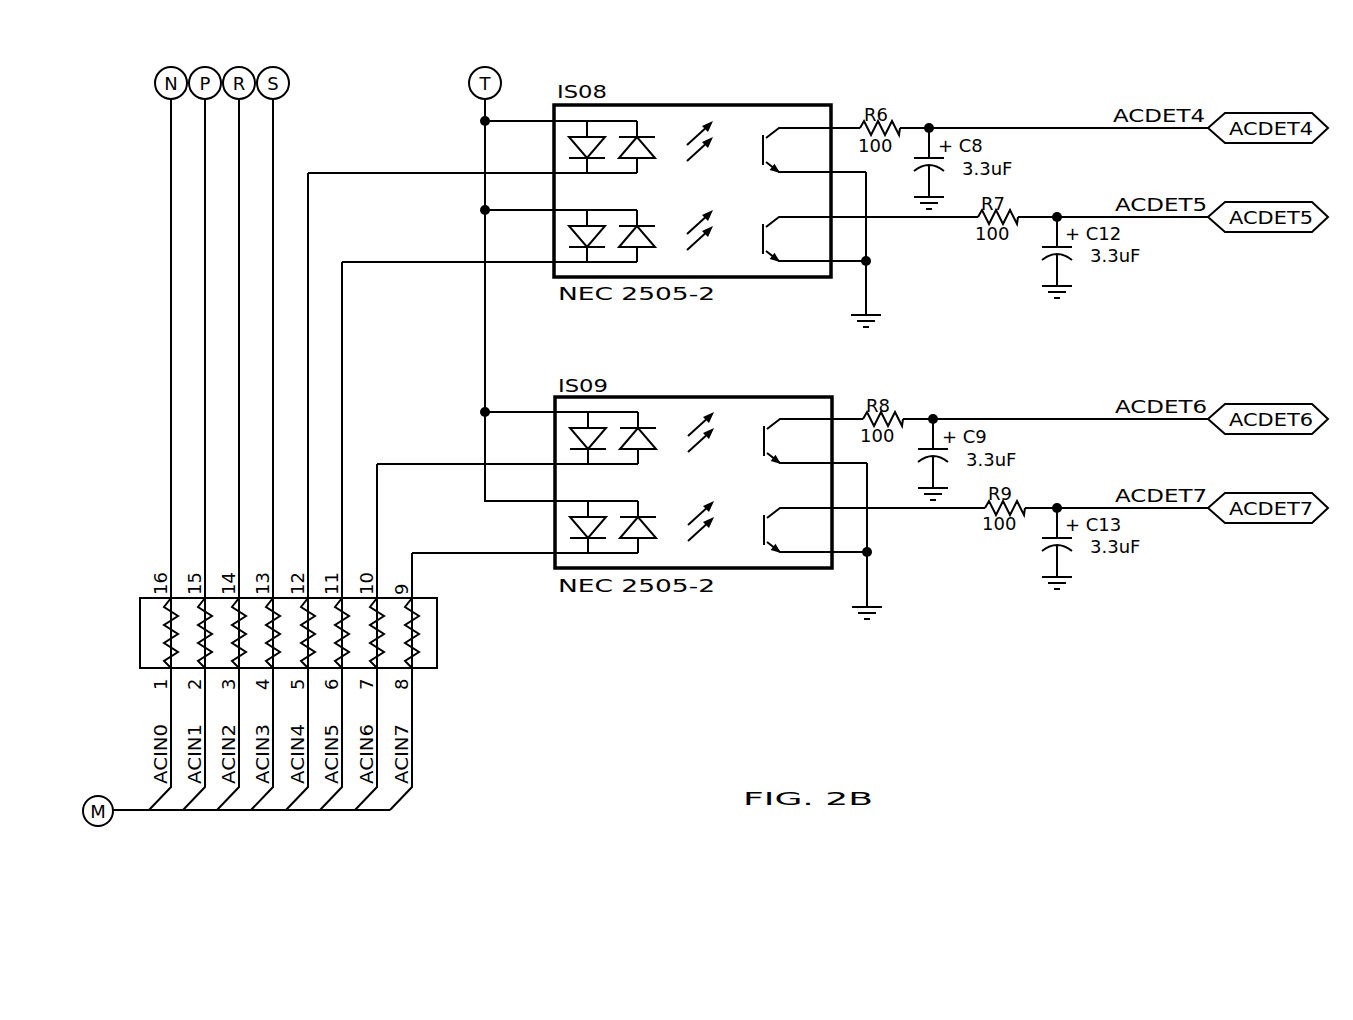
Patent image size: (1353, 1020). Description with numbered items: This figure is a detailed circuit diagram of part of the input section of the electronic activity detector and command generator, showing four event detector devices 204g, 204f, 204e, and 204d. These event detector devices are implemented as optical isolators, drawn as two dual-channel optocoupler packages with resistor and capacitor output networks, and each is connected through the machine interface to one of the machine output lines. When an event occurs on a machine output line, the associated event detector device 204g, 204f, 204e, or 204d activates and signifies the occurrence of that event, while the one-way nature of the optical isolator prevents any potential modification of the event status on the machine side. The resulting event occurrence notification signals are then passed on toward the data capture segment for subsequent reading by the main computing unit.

The event detector device 204g is at (733, 122).
The event detector device 204f is at (695, 262).
The event detector device 204e is at (733, 413).
The event detector device 204d is at (700, 555).